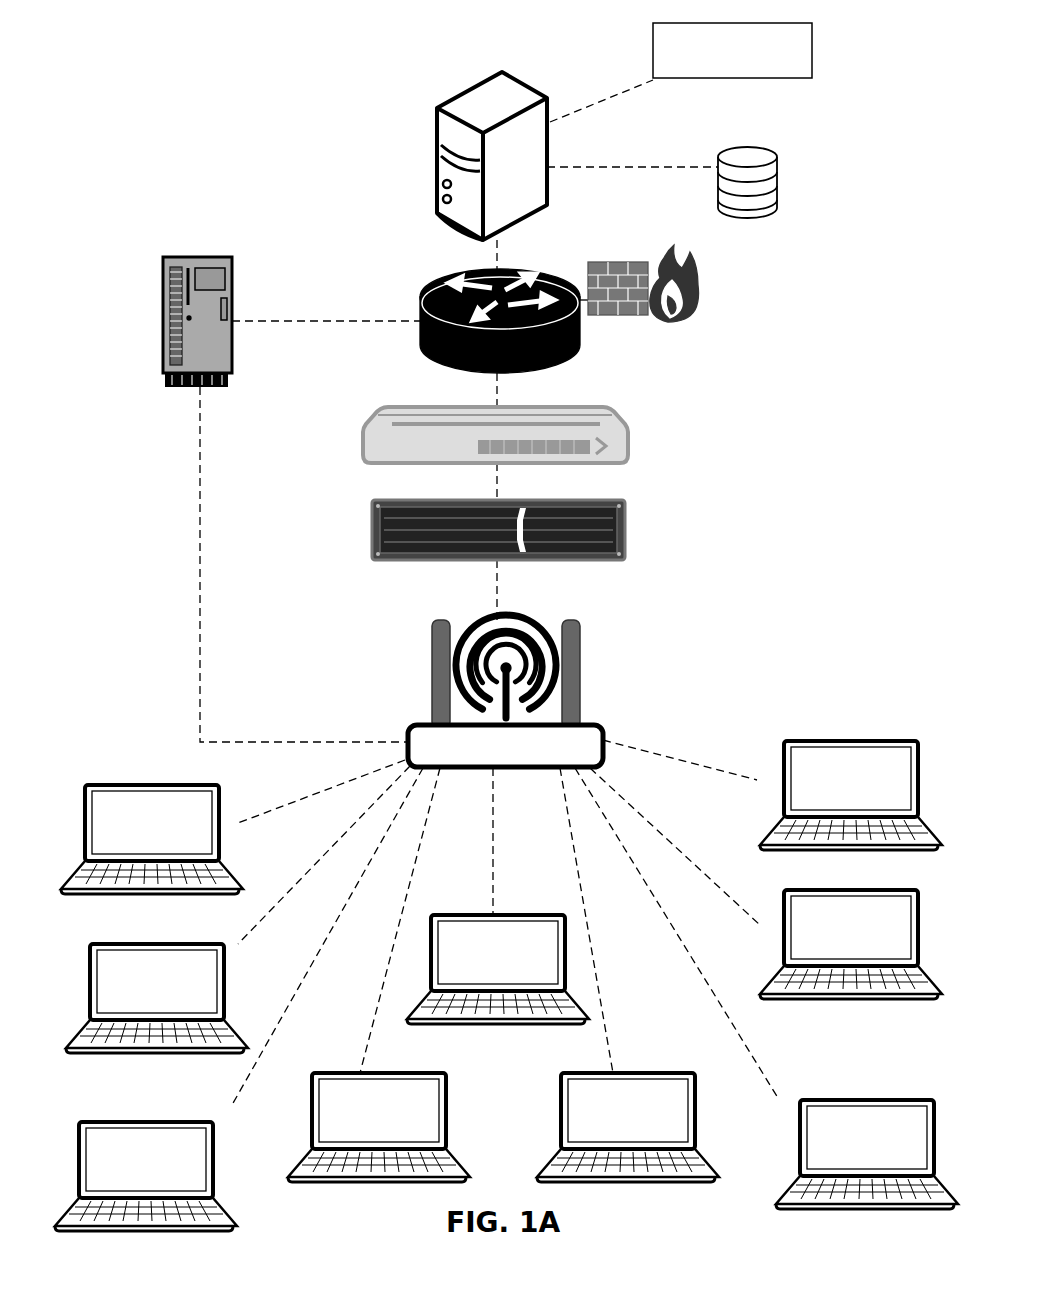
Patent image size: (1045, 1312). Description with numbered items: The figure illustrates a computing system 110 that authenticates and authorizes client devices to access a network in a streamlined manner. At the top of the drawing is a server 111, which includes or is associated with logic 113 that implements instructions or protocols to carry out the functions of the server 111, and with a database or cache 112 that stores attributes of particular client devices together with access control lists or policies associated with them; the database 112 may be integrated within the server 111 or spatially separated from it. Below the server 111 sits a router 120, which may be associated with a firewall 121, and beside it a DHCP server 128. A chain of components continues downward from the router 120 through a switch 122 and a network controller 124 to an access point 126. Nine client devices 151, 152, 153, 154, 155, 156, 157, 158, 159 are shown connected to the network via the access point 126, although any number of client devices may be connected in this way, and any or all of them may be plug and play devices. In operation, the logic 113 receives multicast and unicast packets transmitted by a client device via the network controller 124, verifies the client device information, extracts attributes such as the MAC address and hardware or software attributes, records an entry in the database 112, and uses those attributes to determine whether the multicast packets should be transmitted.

The computing system 110 is at (157, 64).
The server 111 is at (478, 80).
The database or cache 112 is at (778, 186).
The logic 113 is at (732, 50).
The router 120 is at (432, 355).
The firewall 121 is at (697, 303).
The switch 122 is at (606, 414).
The network controller 124 is at (625, 530).
The access point 126 is at (581, 678).
The DHCP server 128 is at (162, 322).
The client device 151 is at (152, 839).
The client device 152 is at (157, 998).
The client device 153 is at (146, 1176).
The client device 154 is at (379, 1127).
The client device 155 is at (498, 969).
The client device 156 is at (628, 1127).
The client device 157 is at (867, 1154).
The client device 158 is at (851, 944).
The client device 159 is at (851, 795).